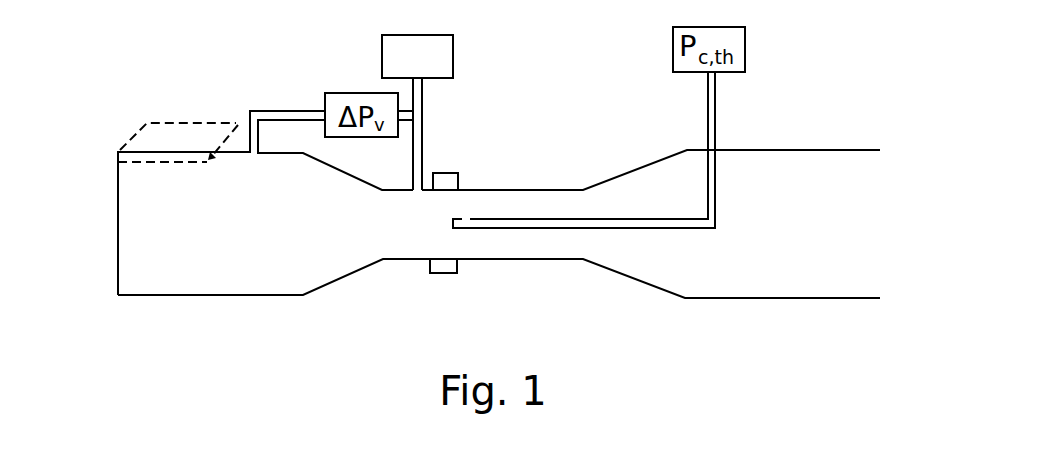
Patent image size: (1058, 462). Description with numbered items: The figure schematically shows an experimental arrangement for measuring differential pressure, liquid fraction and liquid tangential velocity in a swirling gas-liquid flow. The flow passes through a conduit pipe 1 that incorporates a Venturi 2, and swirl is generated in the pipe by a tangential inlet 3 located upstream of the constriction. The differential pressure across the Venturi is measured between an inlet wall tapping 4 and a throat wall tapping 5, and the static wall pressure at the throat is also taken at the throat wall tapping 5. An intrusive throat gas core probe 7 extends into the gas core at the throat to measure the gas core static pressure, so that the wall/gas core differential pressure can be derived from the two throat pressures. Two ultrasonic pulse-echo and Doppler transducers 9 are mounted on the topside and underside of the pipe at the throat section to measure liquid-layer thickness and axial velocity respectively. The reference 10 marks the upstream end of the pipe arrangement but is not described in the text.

The conduit pipe 1 is at (218, 321).
The Venturi 2 is at (400, 261).
The tangential inlet 3 is at (158, 140).
The inlet wall tapping 4 is at (248, 133).
The throat wall tapping 5 is at (421, 143).
The intrusive throat gas core probe 7 is at (466, 221).
The ultrasonic pulse-echo and Doppler transducers 9 is at (455, 167).
The inlet 10 is at (117, 260).